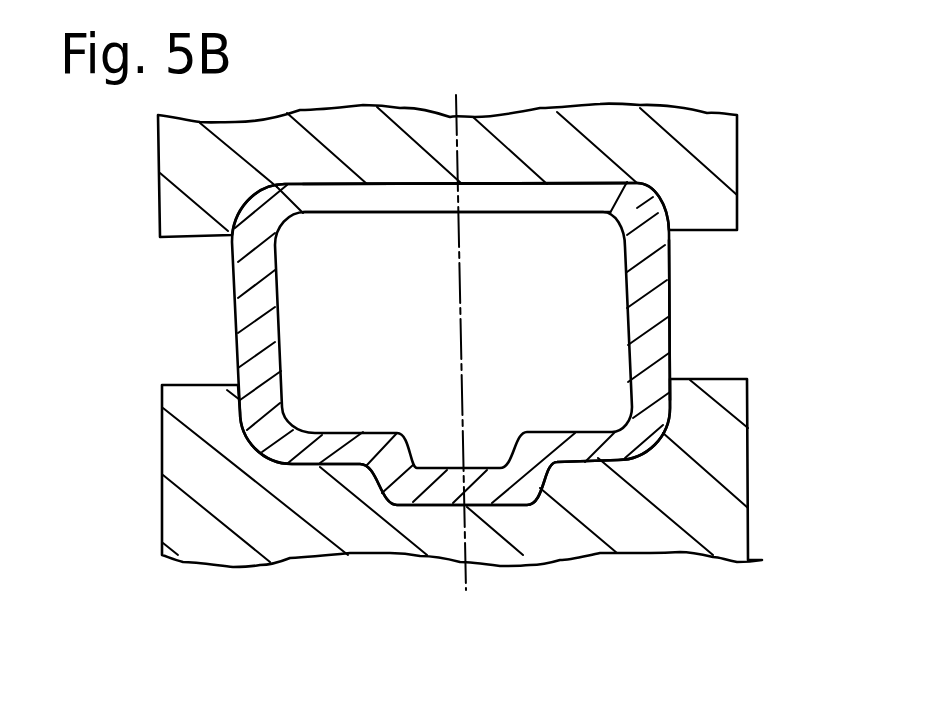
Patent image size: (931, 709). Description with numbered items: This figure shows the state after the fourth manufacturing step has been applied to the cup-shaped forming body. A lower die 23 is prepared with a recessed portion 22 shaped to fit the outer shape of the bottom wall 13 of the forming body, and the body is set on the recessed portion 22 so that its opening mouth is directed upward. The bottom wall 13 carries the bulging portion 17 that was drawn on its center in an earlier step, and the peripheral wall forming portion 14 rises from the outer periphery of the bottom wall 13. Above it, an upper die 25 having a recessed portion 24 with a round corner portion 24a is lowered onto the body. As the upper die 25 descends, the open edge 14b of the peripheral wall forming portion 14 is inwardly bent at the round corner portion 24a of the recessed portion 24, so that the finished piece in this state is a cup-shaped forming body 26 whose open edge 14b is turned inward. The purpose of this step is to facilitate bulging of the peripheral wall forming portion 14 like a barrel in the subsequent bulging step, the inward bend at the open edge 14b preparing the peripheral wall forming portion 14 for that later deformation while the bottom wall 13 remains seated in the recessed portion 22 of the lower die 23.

The upper die 25 is at (722, 142).
The lower die 23 is at (737, 535).
The peripheral wall forming portion 14 is at (537, 405).
The open edge 14b is at (660, 200).
The cup-shaped forming body 26 is at (671, 333).
The recessed portion 24 is at (527, 182).
The round corner portion 24a is at (276, 233).
The bottom wall 13 is at (340, 450).
The bulging portion 17 is at (437, 495).
The recessed portion 22 is at (618, 458).